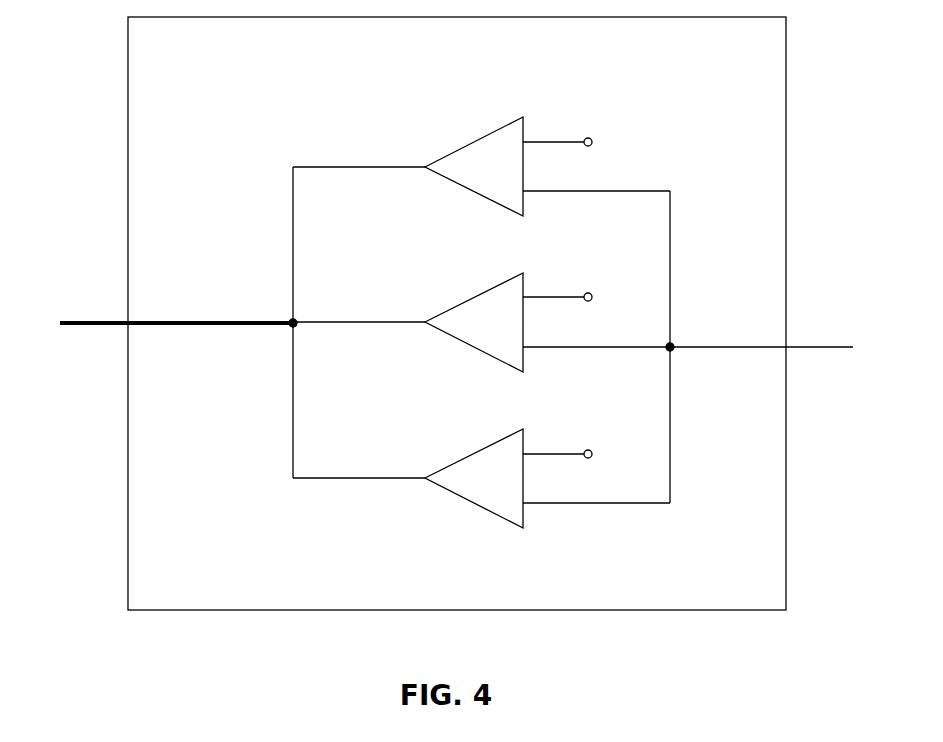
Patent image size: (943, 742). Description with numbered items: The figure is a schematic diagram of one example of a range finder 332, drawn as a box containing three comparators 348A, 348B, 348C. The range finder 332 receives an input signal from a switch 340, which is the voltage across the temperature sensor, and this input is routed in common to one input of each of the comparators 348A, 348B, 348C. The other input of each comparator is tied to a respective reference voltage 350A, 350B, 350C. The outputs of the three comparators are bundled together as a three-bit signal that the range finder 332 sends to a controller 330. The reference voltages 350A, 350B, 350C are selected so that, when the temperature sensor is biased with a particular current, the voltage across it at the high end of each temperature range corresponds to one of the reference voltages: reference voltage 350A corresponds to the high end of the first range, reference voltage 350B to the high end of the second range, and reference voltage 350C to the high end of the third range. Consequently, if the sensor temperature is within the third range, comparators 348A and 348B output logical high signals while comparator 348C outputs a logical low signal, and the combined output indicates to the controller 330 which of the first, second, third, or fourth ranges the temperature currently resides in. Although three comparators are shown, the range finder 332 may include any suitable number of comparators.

The range finder 332 is at (441, 71).
The controller 330 is at (159, 288).
The switch 340 is at (761, 308).
The comparator 348A is at (460, 488).
The comparator 348B is at (460, 332).
The comparator 348C is at (460, 177).
The reference voltage 350A is at (650, 475).
The reference voltage 350B is at (650, 318).
The reference voltage 350C is at (650, 163).